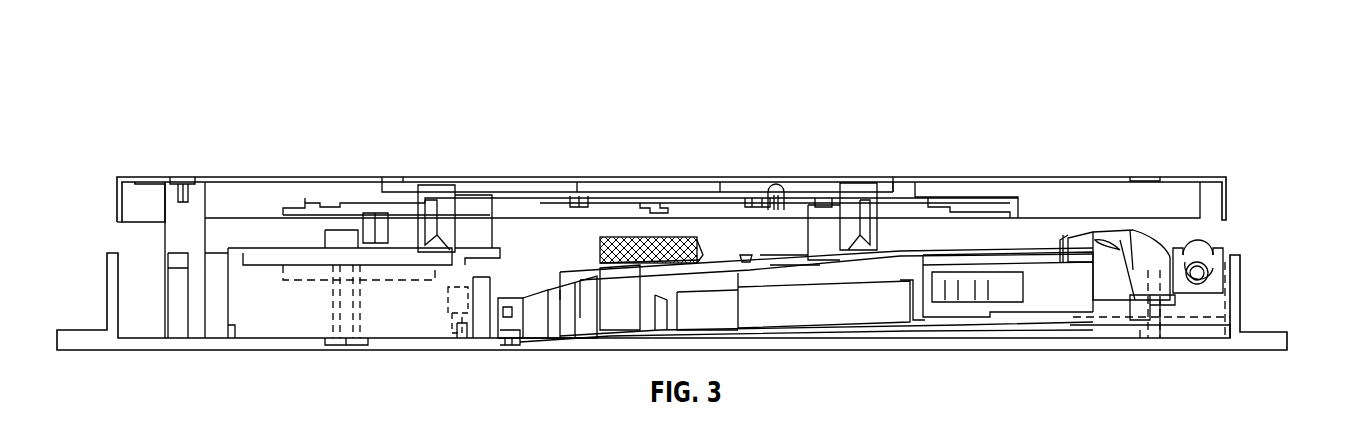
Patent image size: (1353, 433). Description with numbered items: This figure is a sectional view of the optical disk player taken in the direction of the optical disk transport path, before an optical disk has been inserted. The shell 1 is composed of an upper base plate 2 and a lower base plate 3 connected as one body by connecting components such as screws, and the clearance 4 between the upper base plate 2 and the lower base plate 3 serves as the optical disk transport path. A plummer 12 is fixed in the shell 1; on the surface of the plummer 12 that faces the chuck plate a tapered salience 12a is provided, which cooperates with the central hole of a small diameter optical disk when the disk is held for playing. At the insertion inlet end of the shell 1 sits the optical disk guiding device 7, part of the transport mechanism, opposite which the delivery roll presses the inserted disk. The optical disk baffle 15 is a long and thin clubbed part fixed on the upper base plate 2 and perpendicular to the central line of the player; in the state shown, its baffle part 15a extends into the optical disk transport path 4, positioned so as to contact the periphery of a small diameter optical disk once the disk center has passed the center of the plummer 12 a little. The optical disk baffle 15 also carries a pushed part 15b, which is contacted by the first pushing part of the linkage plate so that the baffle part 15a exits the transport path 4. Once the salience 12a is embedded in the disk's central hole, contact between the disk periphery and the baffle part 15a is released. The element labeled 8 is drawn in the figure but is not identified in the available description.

The shell 1 is at (1147, 146).
The upper base plate 2 is at (1228, 177).
The lower base plate 3 is at (1255, 332).
The clearance 4 is at (1205, 235).
The optical disk guiding device 7 is at (1113, 220).
The guide member 8 is at (945, 177).
The plummer 12 is at (735, 255).
The tapered salience 12a is at (703, 243).
The optical disk baffle 15 is at (553, 180).
The baffle part 15a is at (434, 190).
The pushed part 15b is at (780, 185).